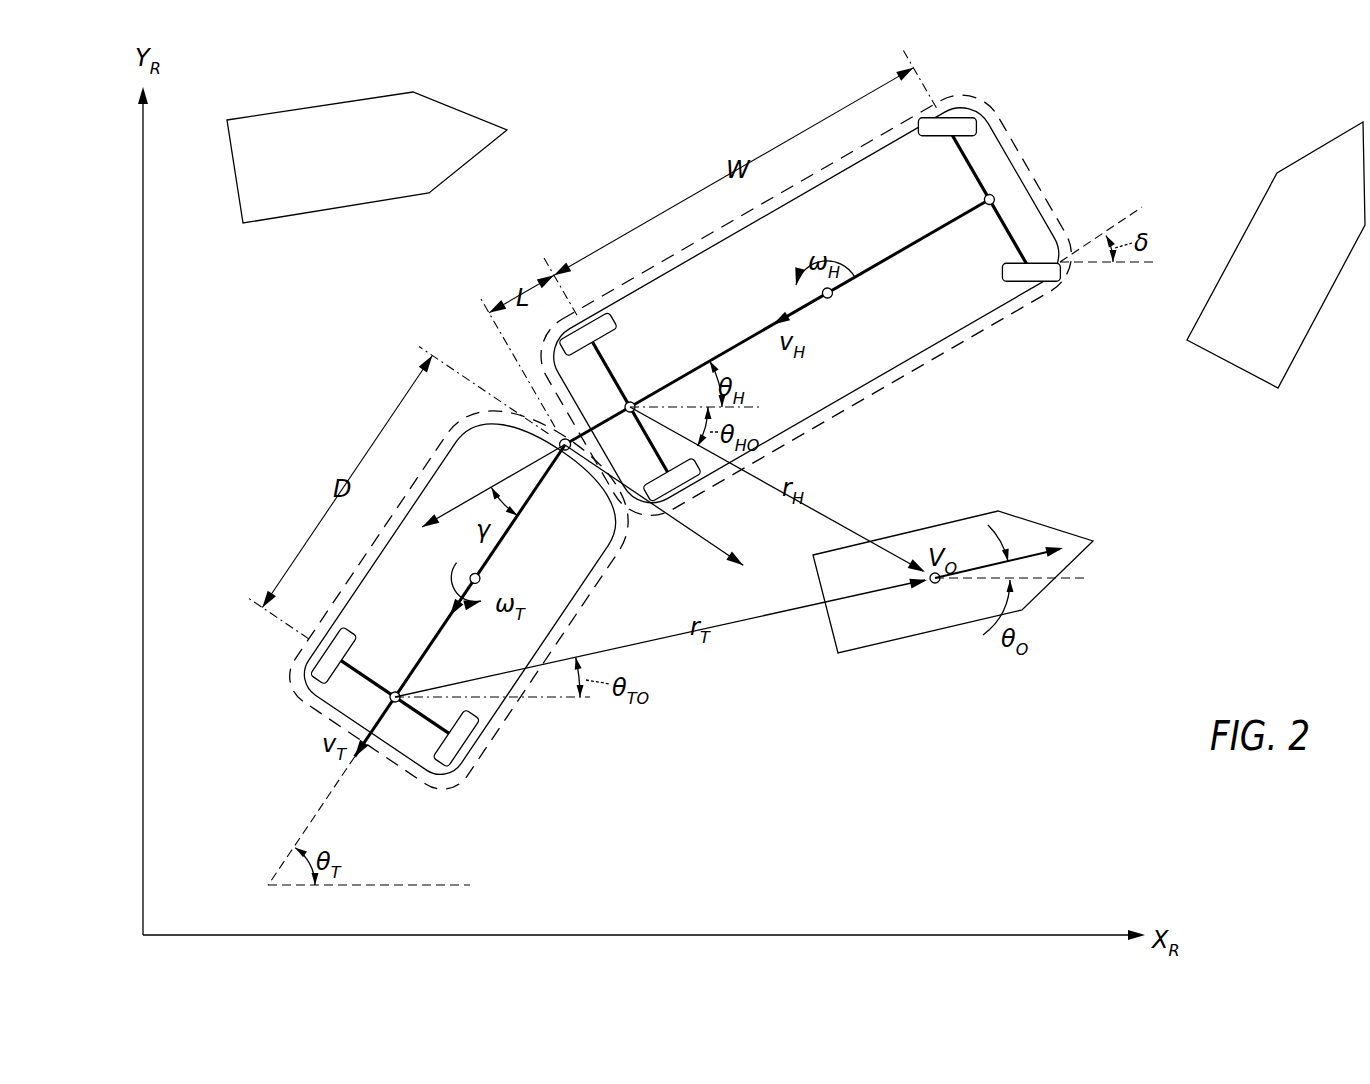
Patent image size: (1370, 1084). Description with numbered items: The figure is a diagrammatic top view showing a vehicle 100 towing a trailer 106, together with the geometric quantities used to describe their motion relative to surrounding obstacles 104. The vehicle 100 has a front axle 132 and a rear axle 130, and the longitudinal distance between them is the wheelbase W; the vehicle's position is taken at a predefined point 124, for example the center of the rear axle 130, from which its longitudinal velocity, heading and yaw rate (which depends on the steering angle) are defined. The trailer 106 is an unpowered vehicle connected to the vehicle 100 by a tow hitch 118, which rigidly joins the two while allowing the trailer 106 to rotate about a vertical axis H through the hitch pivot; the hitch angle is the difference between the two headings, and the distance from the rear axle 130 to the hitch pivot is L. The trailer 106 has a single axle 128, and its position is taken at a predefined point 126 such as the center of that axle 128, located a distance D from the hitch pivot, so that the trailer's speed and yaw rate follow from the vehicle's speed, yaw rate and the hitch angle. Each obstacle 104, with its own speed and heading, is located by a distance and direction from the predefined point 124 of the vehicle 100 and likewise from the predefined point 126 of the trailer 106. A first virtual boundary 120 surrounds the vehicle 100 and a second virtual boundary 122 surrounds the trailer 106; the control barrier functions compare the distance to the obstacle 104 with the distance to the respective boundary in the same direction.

The vehicle 100 is at (950, 305).
The obstacle 104 is at (344, 182).
The trailer 106 is at (548, 580).
The tow hitch 118 is at (559, 445).
The first virtual boundary 120 is at (888, 385).
The second virtual boundary 122 is at (492, 745).
The predefined point of the vehicle 124 is at (634, 402).
The predefined point of the trailer 126 is at (394, 690).
The axle 128 is at (417, 724).
The rear axle 130 is at (607, 355).
The front axle 132 is at (972, 168).